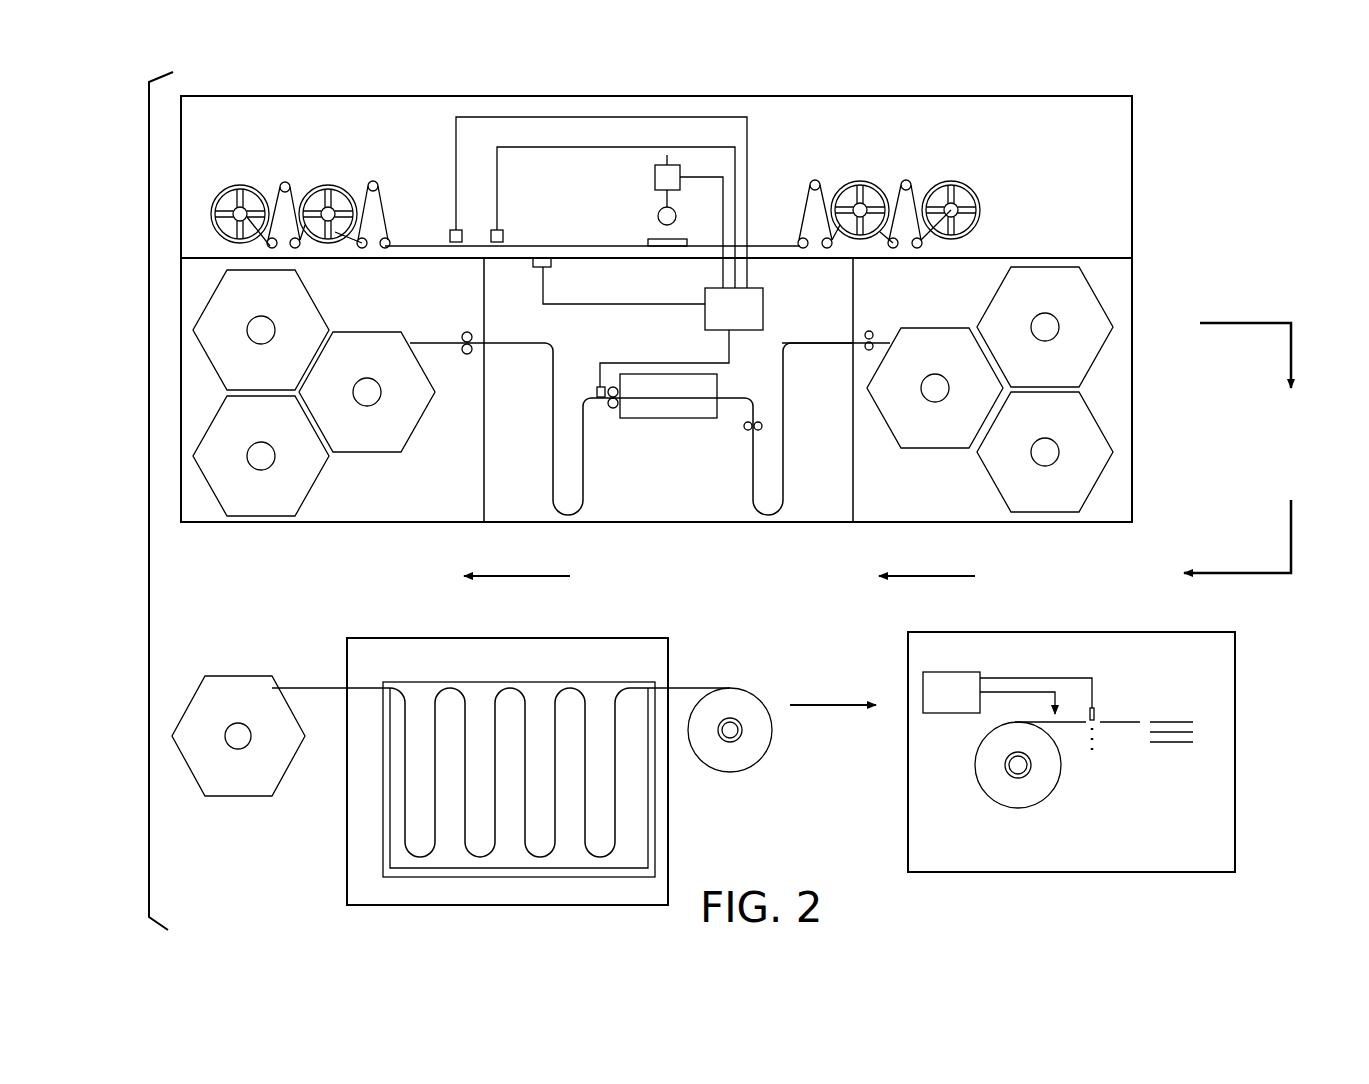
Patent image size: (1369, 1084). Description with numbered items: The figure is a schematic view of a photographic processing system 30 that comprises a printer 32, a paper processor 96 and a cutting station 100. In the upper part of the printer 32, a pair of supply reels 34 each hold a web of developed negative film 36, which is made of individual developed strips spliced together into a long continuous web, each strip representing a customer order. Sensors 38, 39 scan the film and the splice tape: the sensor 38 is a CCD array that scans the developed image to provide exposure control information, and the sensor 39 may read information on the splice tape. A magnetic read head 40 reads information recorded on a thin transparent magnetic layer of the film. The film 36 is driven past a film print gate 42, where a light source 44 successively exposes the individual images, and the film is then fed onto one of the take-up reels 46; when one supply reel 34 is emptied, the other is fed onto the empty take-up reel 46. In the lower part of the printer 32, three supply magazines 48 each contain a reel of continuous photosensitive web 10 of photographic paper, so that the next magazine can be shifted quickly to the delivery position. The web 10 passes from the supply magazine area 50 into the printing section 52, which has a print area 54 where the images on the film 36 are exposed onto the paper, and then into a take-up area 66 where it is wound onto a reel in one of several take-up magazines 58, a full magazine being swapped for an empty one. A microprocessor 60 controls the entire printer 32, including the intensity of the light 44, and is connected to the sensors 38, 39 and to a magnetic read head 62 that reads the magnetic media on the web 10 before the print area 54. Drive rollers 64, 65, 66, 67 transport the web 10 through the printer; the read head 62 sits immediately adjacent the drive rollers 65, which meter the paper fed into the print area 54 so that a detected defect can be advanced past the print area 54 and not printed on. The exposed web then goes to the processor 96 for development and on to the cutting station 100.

The photosensitive web 10 is at (435, 343).
The photographic processing system 30 is at (1265, 217).
The printer 32 is at (1150, 185).
The supply reels 34 is at (238, 190).
The web of developed negative film 36 is at (380, 195).
The sensor 38 is at (450, 236).
The sensor 39 is at (503, 236).
The magnetic read head 40 is at (551, 263).
The film print gate 42 is at (648, 242).
The light source 44 is at (658, 212).
The take-up reels 46 is at (858, 190).
The supply magazines 48 is at (310, 290).
The supply magazine area 50 is at (395, 522).
The printing section 52 is at (660, 522).
The print area 54 is at (660, 418).
The take-up magazines 58 is at (1000, 282).
The microprocessor 60 is at (763, 297).
The magnetic read head 62 is at (597, 390).
The drive rollers 64 is at (470, 360).
The drive rollers 65 is at (608, 409).
The take-up area 66 is at (1100, 522).
The drive rollers 67 is at (863, 345).
The processor 96 is at (692, 646).
The cutting station 100 is at (1255, 680).